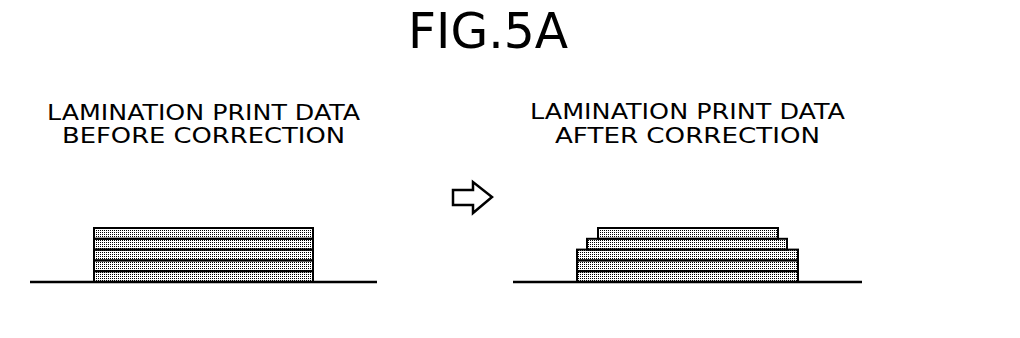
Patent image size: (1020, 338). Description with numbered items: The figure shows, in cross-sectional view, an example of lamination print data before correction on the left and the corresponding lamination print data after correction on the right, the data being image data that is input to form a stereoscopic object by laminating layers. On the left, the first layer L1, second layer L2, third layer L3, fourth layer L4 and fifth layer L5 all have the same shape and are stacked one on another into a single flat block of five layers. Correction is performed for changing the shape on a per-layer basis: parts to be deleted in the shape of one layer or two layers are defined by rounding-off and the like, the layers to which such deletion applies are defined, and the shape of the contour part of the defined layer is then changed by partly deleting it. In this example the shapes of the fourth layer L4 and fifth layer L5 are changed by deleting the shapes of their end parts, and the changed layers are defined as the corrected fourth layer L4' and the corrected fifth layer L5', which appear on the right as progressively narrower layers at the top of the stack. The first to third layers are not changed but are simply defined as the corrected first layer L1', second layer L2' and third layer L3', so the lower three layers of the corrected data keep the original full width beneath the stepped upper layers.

The first layer L1 is at (243, 268).
The second layer L2 is at (243, 249).
The third layer L3 is at (243, 229).
The fourth layer L4 is at (243, 211).
The fifth layer L5 is at (243, 192).
The first layer after correction L1' is at (729, 268).
The second layer after correction L2' is at (729, 249).
The third layer after correction L3' is at (729, 229).
The fourth layer after correction L4' is at (734, 211).
The fifth layer after correction L5' is at (740, 192).